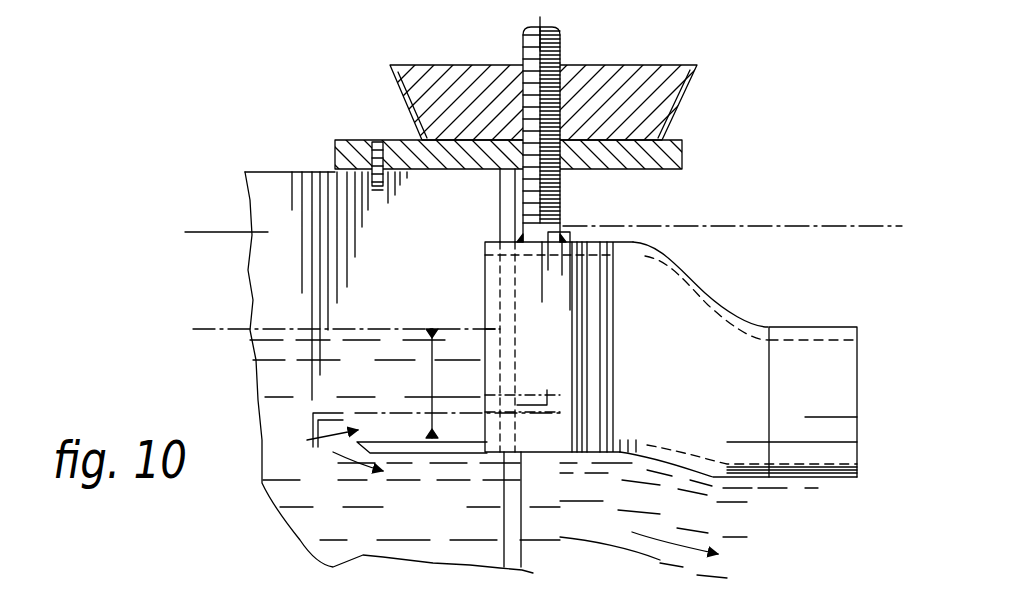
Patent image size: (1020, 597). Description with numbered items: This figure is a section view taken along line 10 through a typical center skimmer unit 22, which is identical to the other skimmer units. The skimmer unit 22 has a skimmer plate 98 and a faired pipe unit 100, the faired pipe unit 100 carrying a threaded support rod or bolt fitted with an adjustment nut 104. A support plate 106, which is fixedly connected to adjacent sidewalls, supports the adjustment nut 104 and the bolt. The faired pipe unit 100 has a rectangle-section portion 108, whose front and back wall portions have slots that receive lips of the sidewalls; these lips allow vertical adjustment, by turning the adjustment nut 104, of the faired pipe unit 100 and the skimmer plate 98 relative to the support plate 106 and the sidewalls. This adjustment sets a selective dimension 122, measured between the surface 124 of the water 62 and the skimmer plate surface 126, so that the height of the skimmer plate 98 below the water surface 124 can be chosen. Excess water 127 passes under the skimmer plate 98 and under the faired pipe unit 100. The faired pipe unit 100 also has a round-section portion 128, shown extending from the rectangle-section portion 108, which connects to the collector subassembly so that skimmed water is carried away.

The center skimmer unit 22 is at (670, 38).
The adjustment nut 104 is at (665, 95).
The support plate 106 is at (335, 157).
The rectangle-section portion 108 is at (595, 277).
The faired pipe unit 100 is at (708, 297).
The round-section portion 128 is at (792, 337).
The water 62 is at (270, 343).
The surface of water 124 is at (360, 325).
The selective dimension 122 is at (433, 365).
The skimmer plate surface 126 is at (398, 440).
The skimmer plate 98 is at (407, 450).
The excess water 127 is at (657, 518).
The section line 10 is at (895, 200).